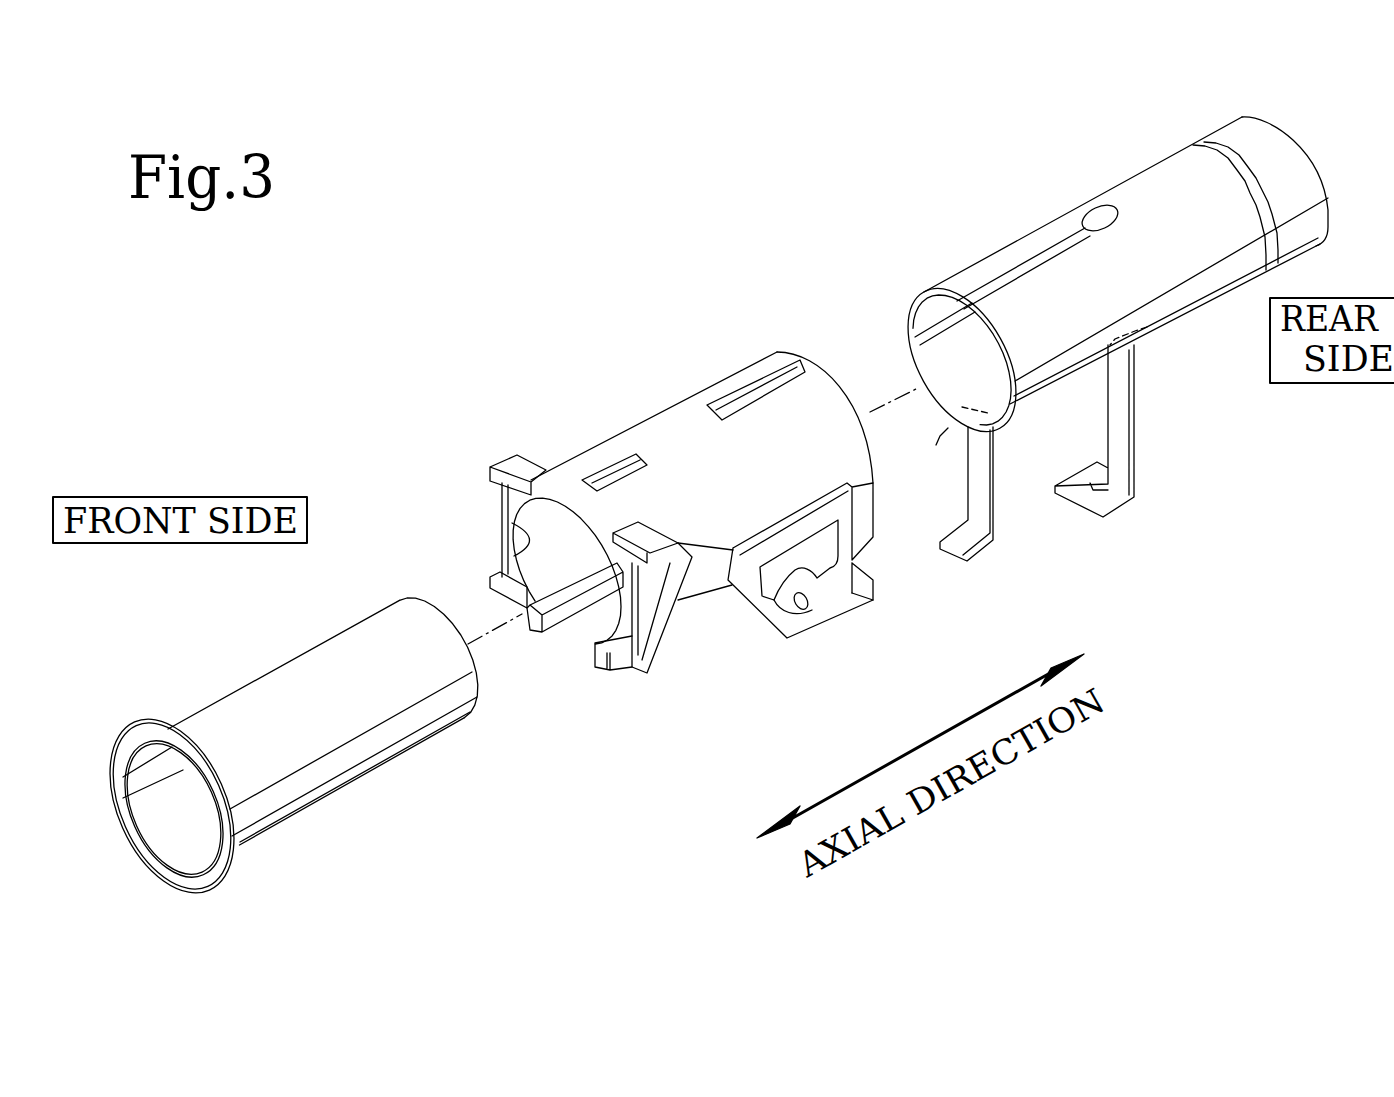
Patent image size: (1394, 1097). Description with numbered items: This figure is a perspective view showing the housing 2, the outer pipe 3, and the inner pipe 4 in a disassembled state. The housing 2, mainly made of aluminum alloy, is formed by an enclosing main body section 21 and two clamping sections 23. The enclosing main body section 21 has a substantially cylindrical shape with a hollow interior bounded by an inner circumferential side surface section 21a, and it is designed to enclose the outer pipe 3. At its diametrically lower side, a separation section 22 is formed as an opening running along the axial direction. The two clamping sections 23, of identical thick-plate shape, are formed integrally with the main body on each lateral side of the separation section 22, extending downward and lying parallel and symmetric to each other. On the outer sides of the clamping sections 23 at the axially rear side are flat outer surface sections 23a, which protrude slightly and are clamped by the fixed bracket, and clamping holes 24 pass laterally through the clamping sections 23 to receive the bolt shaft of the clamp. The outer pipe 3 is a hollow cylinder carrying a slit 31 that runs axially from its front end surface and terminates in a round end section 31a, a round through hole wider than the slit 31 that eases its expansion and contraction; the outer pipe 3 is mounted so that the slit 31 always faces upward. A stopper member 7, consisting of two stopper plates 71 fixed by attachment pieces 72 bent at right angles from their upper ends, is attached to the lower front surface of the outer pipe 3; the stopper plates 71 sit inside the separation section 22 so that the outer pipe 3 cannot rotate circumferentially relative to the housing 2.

The housing 2 is at (673, 549).
The outer pipe 3 is at (1107, 378).
The inner pipe 4 is at (289, 660).
The stopper member 7 is at (1094, 492).
The enclosing main body section 21 is at (560, 490).
The inner circumferential side surface section 21a is at (516, 552).
The separation section 22 is at (575, 633).
The clamping sections 23 is at (732, 621).
The flat outer surface sections 23a is at (845, 535).
The clamping holes 24 is at (806, 612).
The slit 31 is at (1000, 272).
The round end section 31a is at (1097, 210).
The stopper plates 71 is at (997, 497).
The attachment pieces 72 is at (1148, 326).